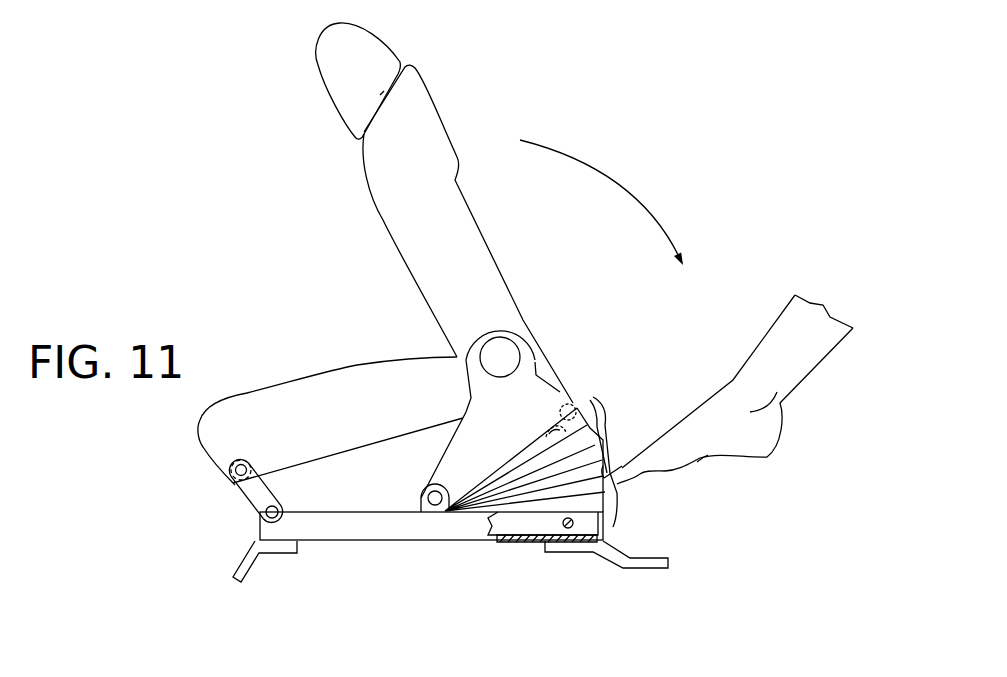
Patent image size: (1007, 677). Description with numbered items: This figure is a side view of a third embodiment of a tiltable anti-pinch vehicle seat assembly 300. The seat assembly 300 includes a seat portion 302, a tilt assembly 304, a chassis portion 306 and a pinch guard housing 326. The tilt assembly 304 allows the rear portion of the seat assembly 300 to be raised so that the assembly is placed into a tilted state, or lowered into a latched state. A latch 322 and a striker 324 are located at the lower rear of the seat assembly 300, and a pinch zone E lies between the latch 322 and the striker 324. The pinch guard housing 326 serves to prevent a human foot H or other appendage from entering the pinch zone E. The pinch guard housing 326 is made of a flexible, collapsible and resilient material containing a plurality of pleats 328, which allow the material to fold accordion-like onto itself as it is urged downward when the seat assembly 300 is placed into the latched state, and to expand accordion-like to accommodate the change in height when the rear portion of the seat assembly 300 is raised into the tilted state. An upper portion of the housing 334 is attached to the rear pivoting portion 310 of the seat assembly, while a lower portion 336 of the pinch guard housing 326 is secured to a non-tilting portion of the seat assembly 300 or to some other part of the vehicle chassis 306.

The tiltable anti-pinch vehicle seat assembly 300 is at (240, 127).
The seat portion 302 is at (335, 153).
The tilt assembly 304 is at (243, 502).
The chassis portion 306 is at (643, 570).
The rear pivoting portion 310 is at (522, 440).
The latch 322 is at (567, 410).
The striker 324 is at (569, 529).
The pinch guard housing 326 is at (622, 426).
The pleats 328 is at (616, 467).
The upper portion of the housing 334 is at (557, 425).
The lower portion of the pinch guard housing 336 is at (507, 513).
The pinch zone E is at (543, 487).
The human foot H is at (793, 368).